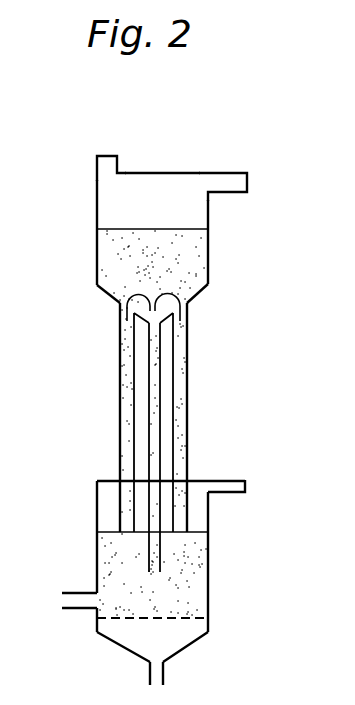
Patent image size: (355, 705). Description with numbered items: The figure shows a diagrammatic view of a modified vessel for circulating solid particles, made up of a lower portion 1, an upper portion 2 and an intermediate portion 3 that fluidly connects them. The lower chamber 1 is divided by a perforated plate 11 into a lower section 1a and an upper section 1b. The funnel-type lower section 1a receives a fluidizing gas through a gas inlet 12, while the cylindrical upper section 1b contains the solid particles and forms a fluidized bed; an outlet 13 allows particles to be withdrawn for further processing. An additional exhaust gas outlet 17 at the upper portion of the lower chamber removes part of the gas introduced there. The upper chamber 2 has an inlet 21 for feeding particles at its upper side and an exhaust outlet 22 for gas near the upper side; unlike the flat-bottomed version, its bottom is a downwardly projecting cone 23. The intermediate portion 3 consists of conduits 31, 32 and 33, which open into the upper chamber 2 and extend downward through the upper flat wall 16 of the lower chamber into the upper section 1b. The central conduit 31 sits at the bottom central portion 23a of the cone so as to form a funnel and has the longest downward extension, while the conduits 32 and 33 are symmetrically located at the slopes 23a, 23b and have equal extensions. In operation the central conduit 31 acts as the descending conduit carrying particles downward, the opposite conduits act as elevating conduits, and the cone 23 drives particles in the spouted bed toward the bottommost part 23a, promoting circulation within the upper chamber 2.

The lower portion 1 is at (210, 582).
The lower section 1a is at (109, 629).
The upper section 1b is at (107, 554).
The upper portion 2 is at (209, 237).
The intermediate portion 3 is at (189, 369).
The perforated plate 11 is at (178, 619).
The gas inlet 12 is at (165, 672).
The outlet 13 is at (83, 607).
The upper flat wall 16 is at (202, 480).
The additional exhaust gas outlet 17 is at (238, 493).
The inlet 21 is at (118, 166).
The exhaust outlet 22 is at (230, 183).
The cone 23 is at (96, 285).
The bottom central portion 23a is at (147, 323).
The slope 23b is at (188, 304).
The central conduit 31 is at (150, 384).
The conduit 32 is at (124, 432).
The conduit 33 is at (183, 410).